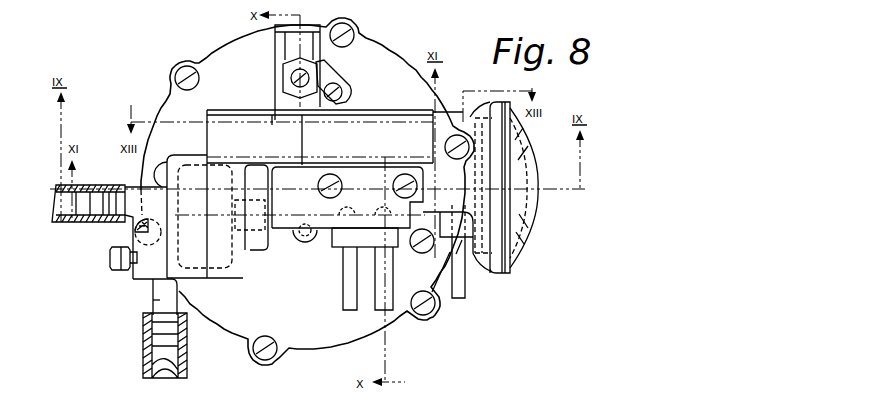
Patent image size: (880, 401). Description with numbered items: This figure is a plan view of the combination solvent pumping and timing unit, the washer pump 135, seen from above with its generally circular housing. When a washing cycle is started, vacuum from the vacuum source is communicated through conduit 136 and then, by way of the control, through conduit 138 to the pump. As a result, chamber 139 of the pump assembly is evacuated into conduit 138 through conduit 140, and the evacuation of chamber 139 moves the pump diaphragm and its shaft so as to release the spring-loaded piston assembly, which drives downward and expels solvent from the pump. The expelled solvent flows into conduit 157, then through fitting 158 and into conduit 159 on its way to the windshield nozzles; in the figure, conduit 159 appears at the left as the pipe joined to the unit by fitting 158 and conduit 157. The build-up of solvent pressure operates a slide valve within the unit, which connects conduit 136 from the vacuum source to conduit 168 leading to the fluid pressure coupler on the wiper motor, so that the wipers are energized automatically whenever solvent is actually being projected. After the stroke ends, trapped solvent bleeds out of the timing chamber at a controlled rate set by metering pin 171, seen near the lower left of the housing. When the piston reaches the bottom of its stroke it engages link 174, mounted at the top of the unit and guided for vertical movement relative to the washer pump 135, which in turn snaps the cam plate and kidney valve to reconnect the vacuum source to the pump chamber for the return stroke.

The washer pump 135 is at (222, 340).
The conduit 136 is at (390, 291).
The conduit 138 is at (465, 286).
The chamber 139 is at (529, 143).
The conduit 140 is at (463, 110).
The conduit 157 is at (157, 361).
The fitting 158 is at (158, 298).
The conduit 159 is at (102, 186).
The conduit 168 is at (345, 283).
The metering pin 171 is at (117, 270).
The link 174 is at (333, 22).